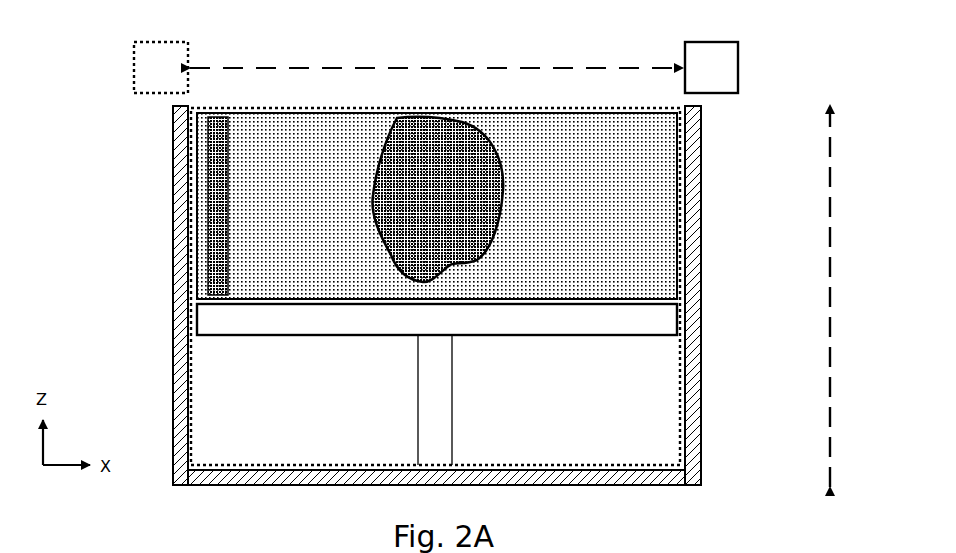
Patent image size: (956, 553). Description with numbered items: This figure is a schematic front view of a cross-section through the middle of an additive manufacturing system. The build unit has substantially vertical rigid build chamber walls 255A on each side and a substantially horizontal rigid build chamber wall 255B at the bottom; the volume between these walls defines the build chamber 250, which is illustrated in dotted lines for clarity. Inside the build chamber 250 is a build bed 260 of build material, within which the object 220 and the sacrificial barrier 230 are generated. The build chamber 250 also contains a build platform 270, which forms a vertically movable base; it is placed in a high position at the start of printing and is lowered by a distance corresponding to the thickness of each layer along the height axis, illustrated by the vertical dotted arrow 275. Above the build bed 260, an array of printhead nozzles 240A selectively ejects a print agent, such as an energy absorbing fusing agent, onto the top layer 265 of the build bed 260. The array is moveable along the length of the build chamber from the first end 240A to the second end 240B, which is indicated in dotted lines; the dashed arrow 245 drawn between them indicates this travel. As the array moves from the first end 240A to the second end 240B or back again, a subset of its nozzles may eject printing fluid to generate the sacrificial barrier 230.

The object 220 is at (493, 252).
The sacrificial barrier 230 is at (208, 166).
The array of printhead nozzles 240A is at (738, 66).
The second end 240B is at (134, 62).
The signal path / distance 245 is at (338, 68).
The build chamber 250 is at (213, 370).
The vertical rigid build chamber walls 255A is at (173, 240).
The horizontal rigid build chamber wall 255B is at (238, 485).
The build bed 260 is at (623, 143).
The top layer 265 is at (544, 113).
The build platform 270 is at (578, 335).
The vertical dotted arrow 275 is at (830, 378).